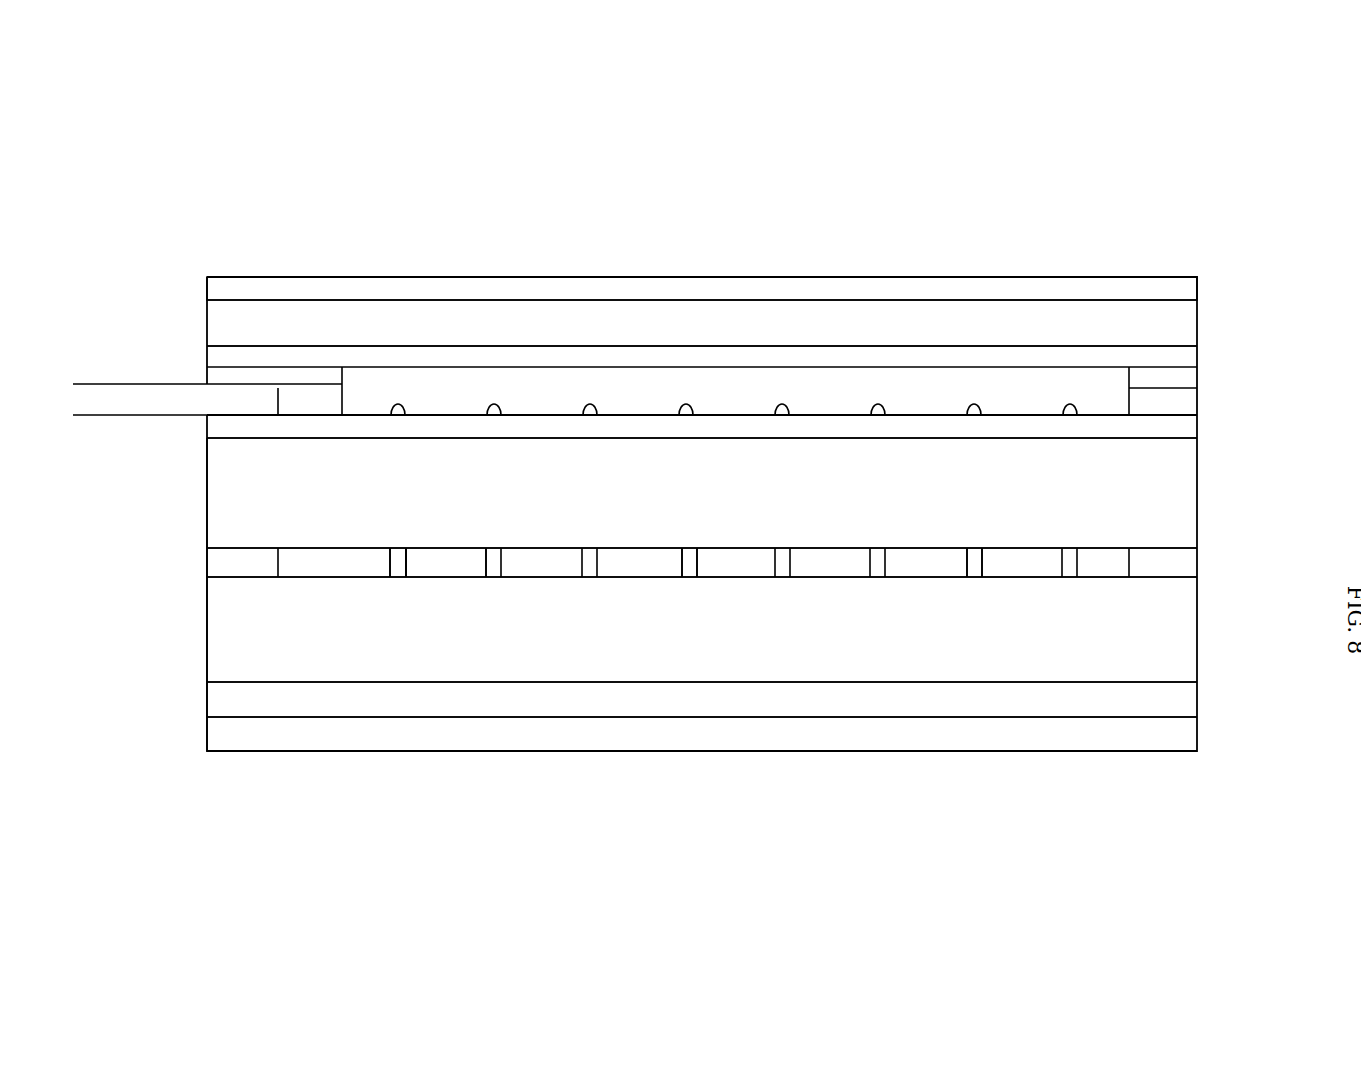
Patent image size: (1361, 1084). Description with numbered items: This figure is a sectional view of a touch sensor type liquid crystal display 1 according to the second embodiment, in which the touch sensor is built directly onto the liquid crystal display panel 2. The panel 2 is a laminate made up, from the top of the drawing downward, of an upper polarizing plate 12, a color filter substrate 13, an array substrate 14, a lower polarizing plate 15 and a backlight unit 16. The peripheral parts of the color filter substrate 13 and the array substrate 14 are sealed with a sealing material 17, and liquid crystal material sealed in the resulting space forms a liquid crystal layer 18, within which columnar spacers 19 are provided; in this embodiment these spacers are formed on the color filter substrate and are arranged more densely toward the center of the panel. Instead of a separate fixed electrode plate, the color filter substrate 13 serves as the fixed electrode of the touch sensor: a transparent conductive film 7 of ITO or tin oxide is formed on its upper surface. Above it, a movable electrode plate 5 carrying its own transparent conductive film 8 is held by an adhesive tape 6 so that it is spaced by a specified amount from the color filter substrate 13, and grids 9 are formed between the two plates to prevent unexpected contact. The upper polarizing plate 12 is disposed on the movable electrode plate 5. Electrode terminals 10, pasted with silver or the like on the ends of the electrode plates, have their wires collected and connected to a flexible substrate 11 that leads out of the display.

The liquid crystal display device 1 is at (604, 268).
The liquid crystal display panel 2 is at (117, 732).
The movable electrode plate 5 is at (228, 330).
The adhesive tape 6 is at (1195, 400).
The transparent conductive film 7 is at (1195, 430).
The transparent conductive film 8 is at (225, 354).
The grids 9 is at (405, 411).
The electrode terminals 10 is at (1195, 378).
The flexible substrate 11 is at (100, 392).
The upper polarizing plate 12 is at (222, 288).
The color filter substrate 13 is at (235, 492).
The array substrate 14 is at (220, 630).
The lower polarizing plate 15 is at (225, 705).
The backlight unit 16 is at (222, 737).
The sealing material 17 is at (225, 565).
The liquid crystal layer 18 is at (757, 565).
The openings 19 is at (403, 577).